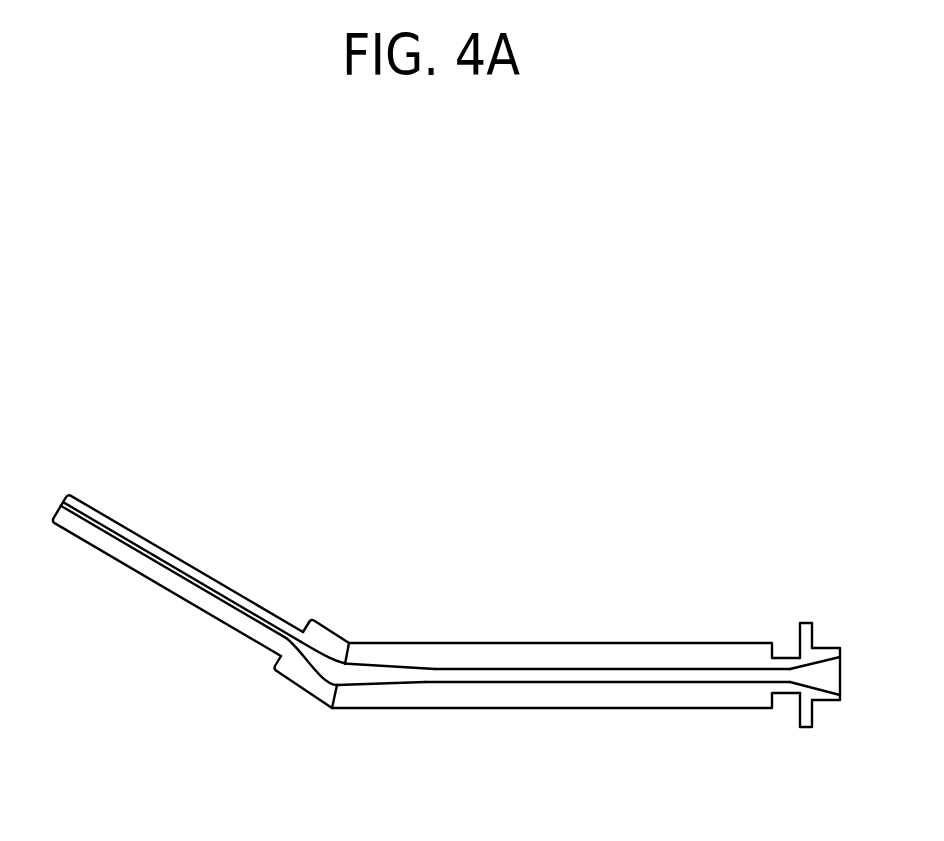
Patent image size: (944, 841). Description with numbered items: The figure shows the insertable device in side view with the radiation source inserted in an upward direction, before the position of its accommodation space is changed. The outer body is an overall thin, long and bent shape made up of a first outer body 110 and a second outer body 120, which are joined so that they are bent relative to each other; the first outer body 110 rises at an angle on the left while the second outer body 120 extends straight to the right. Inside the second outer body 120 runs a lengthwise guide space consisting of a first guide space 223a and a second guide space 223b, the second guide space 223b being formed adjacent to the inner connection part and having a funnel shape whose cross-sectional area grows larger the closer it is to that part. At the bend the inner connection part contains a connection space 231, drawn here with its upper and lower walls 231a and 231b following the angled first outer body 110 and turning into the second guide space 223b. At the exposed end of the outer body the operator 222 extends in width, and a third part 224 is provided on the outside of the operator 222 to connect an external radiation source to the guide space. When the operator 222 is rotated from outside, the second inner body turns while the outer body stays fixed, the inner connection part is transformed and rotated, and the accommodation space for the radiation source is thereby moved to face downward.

The first outer body 110 is at (93, 508).
The second outer body 120 is at (603, 641).
The operator 222 is at (803, 621).
The first guide space 223a is at (617, 673).
The second guide space 223b is at (410, 675).
The third part 224 is at (827, 703).
The connection space 231 is at (343, 670).
The upper channel wall 231a is at (207, 592).
The lower channel wall 231b is at (290, 641).